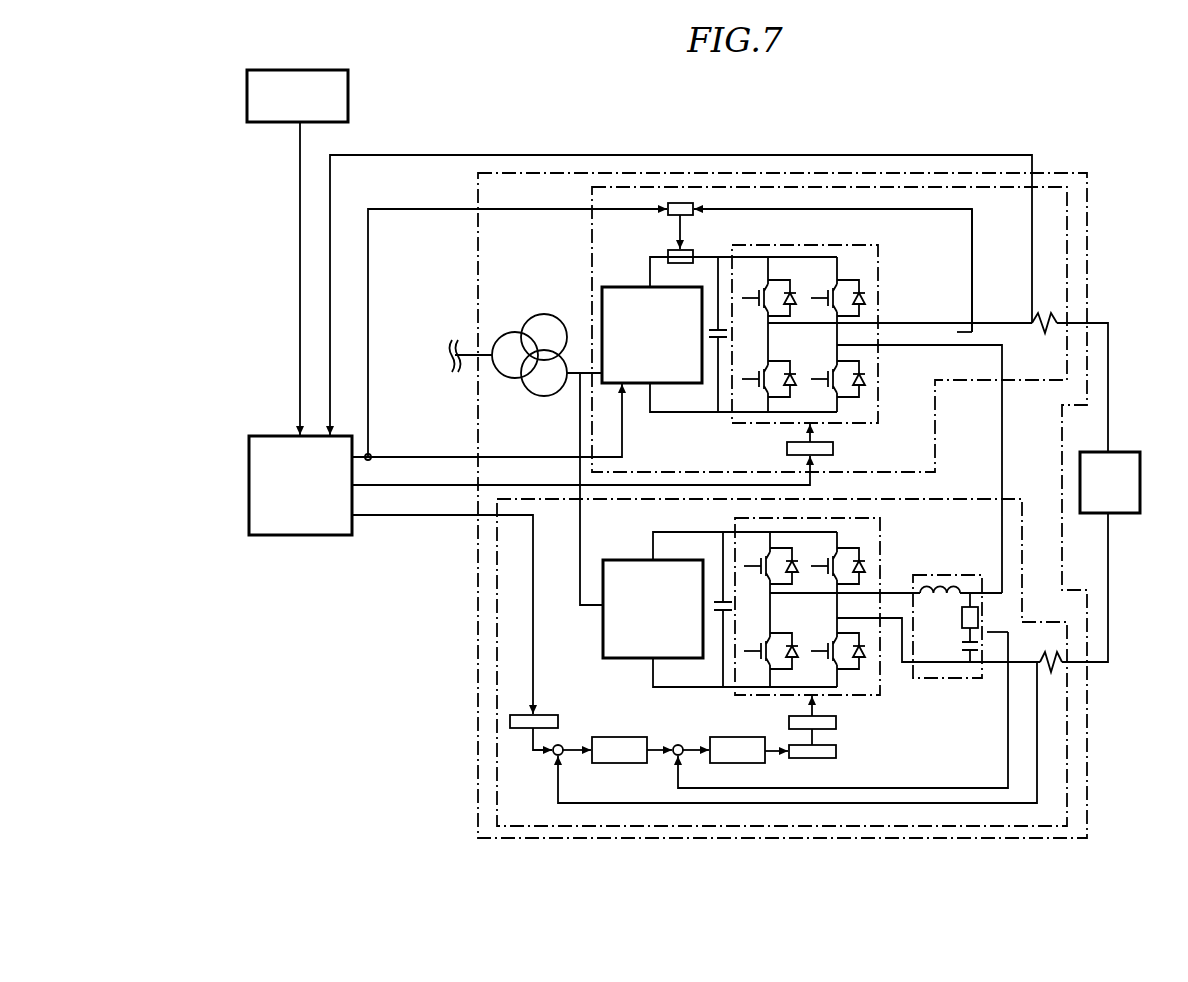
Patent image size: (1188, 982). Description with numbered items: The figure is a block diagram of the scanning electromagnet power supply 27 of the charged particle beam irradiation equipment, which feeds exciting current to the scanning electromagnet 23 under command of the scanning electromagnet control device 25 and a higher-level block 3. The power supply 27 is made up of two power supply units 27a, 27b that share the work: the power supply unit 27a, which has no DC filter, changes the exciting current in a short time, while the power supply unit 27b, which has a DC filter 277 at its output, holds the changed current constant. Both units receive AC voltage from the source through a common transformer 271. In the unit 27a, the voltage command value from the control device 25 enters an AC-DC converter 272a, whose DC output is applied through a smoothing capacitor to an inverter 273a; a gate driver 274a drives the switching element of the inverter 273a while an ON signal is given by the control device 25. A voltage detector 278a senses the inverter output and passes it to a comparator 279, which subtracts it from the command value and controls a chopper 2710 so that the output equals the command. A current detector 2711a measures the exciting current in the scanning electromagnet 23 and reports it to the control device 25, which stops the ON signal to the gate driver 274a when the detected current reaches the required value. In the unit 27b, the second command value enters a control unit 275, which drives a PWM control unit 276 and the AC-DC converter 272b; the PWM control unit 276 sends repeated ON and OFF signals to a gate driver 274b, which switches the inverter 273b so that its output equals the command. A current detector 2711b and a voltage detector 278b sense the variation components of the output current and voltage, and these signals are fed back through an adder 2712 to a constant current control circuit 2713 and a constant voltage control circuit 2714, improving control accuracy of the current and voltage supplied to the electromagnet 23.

The power system / upper-level device 3 is at (300, 70).
The scanning electromagnet 23 is at (1120, 452).
The scanning electromagnet control device 25 is at (298, 536).
The scanning electromagnet power supply 27 is at (1087, 220).
The power supply unit 27a is at (965, 382).
The power supply unit 27b is at (968, 498).
The transformer 271 is at (543, 313).
The AC-DC converter 272a is at (632, 287).
The AC-DC converter 272b is at (623, 560).
The inverter 273a is at (878, 280).
The inverter 273b is at (880, 555).
The gate driver 274a is at (787, 447).
The gate driver 274b is at (836, 722).
The control unit 275 is at (548, 715).
The PWM control unit 276 is at (836, 752).
The DC filter 277 is at (950, 575).
The voltage detector 278a is at (950, 338).
The voltage detector 278b is at (990, 632).
The comparator 279 is at (680, 203).
The chopper 2710 is at (695, 257).
The current detector 2711a is at (1055, 318).
The current detector 2711b is at (1050, 665).
The adder 2712 is at (565, 745).
The constant current control circuit (ACR) 2713 is at (620, 763).
The constant voltage control circuit (AVR) 2714 is at (735, 737).